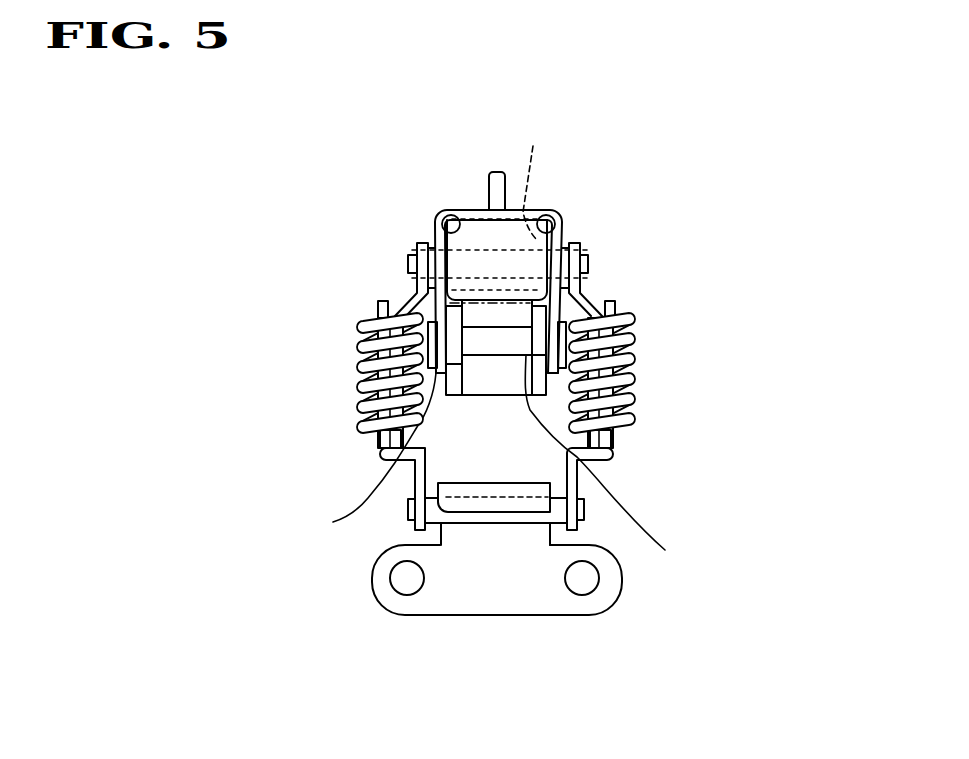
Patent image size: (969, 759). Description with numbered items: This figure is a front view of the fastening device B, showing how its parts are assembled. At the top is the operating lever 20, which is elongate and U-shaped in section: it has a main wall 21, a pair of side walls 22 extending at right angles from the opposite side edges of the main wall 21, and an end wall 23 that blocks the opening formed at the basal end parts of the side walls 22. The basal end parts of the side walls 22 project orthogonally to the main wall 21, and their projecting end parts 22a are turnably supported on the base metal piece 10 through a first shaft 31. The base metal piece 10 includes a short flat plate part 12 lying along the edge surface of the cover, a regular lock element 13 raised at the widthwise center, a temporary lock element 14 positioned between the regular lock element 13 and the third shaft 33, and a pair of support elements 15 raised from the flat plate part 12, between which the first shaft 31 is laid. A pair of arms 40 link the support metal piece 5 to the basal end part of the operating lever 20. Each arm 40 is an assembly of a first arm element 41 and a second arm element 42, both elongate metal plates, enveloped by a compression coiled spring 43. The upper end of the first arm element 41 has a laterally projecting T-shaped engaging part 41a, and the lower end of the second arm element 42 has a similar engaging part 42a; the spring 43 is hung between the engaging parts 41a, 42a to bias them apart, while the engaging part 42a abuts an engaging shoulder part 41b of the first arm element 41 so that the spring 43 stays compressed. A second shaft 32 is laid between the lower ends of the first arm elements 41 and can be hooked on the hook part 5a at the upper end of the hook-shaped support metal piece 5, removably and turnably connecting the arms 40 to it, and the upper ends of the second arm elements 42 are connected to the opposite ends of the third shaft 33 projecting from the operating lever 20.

The support metal piece 5 is at (559, 615).
The hook part 5a is at (480, 514).
The base metal piece 10 is at (512, 399).
The short flat plate part 12 is at (497, 397).
The regular lock element 13 is at (487, 184).
The temporary lock element 14 is at (544, 174).
The support elements 15 is at (450, 378).
The operating lever 20 is at (557, 205).
The main wall 21 is at (470, 208).
The side walls 22 is at (435, 228).
The projecting end parts 22a is at (355, 459).
The end wall 23 is at (452, 230).
The first shaft 31 is at (617, 468).
The second shaft 32 is at (523, 523).
The third shaft 33 is at (584, 261).
The arm 40 is at (348, 388).
The first arm element 41 is at (376, 440).
The engaging part 41a is at (376, 306).
The engaging shoulder part 41b is at (598, 477).
The second arm element 42 is at (407, 295).
The engaging part 42a is at (387, 446).
The compression coiled spring 43 is at (357, 346).
The fastening device B is at (589, 212).